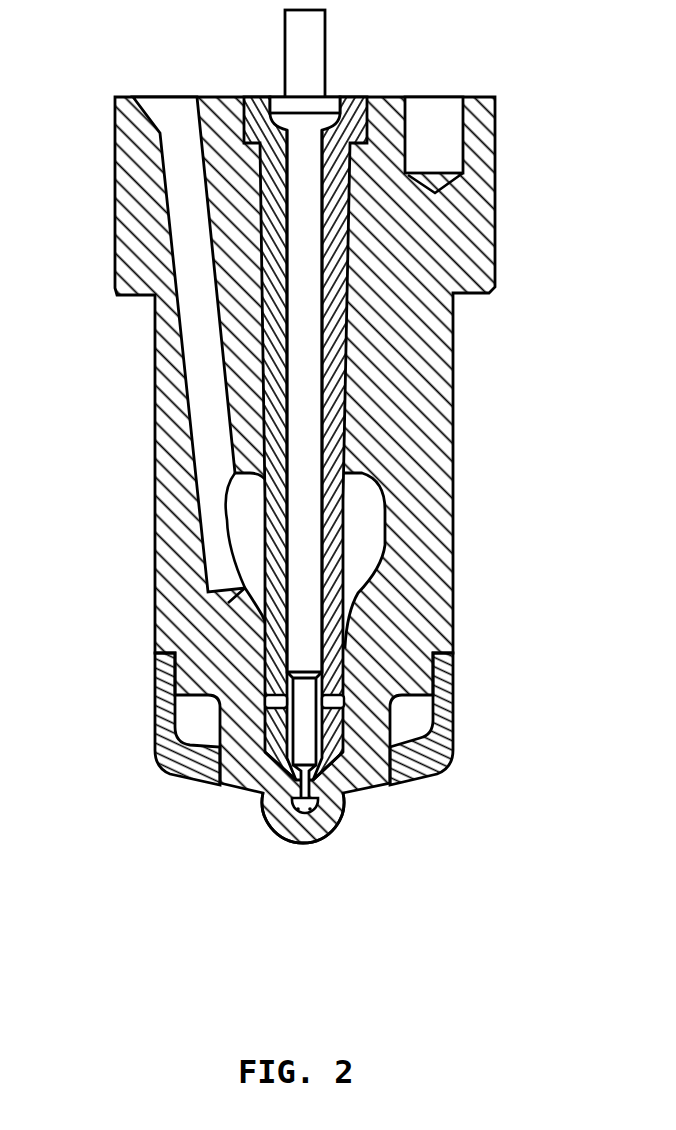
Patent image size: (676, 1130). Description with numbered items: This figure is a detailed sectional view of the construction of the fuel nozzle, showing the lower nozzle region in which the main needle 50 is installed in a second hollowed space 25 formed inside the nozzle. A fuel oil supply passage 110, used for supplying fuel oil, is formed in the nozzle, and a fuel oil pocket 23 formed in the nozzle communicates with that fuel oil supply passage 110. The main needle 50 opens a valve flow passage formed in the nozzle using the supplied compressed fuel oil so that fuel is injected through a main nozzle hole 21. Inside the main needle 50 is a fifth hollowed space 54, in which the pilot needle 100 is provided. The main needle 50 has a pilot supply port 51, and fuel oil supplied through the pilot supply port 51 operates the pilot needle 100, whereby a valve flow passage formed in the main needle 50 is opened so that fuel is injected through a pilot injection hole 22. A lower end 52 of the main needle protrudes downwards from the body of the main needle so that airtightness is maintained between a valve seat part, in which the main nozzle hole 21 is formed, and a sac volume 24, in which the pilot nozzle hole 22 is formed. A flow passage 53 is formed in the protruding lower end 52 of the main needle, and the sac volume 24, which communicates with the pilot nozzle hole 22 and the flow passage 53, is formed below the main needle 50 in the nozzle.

The main nozzle hole 21 is at (272, 793).
The pilot injection hole 22 is at (333, 818).
The fuel oil pocket 23 is at (370, 528).
The sac volume 24 is at (305, 813).
The second hollowed space 25 is at (252, 352).
The main needle 50 is at (272, 295).
The pilot supply port 51 is at (332, 702).
The lower end of the main needle 52 is at (270, 813).
The flow passage 53 is at (345, 792).
The fifth hollowed space 54 is at (333, 336).
The pilot needle 100 is at (303, 420).
The fuel oil supply passage 110 is at (212, 430).